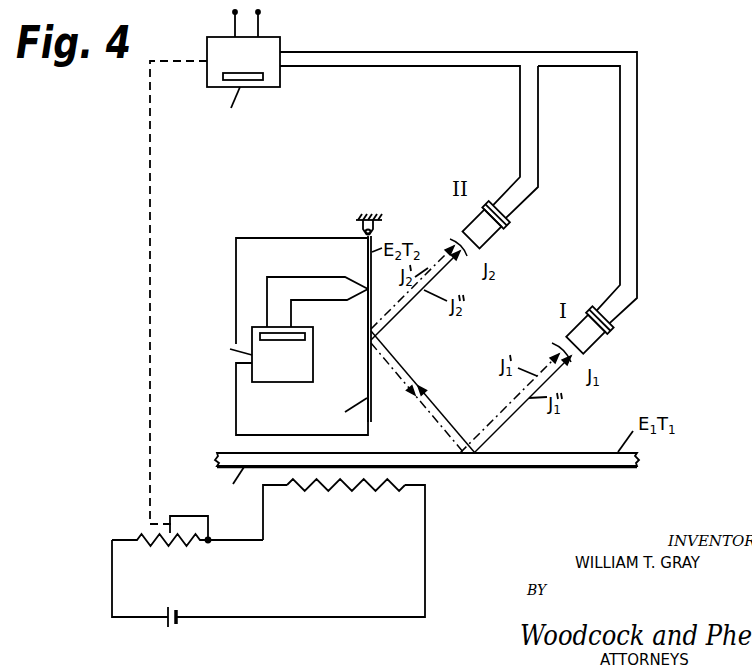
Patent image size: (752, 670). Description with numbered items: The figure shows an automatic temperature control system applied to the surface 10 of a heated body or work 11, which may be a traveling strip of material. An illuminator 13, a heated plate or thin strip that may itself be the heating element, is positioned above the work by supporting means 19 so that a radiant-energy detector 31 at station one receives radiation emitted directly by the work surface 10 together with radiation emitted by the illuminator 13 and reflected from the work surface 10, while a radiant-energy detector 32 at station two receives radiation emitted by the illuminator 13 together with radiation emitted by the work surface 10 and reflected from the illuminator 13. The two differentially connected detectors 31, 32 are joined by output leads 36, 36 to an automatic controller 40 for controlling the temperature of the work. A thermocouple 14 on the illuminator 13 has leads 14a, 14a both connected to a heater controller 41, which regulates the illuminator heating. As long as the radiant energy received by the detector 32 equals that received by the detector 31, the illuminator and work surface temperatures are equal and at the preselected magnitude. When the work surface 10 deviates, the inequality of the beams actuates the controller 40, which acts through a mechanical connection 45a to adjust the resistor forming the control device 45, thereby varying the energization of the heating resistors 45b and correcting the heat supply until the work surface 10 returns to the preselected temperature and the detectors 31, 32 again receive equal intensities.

The automatic controller 40 is at (258, 65).
The output leads 36 is at (462, 68).
The radiant-energy detector 32 is at (507, 220).
The radiant-energy detector 31 is at (607, 325).
The supporting means 19 is at (363, 231).
The illuminator 13 is at (372, 408).
The thermocouple 14 is at (364, 292).
The leads 14a is at (326, 300).
The heater controller 41 is at (296, 373).
The surface 10 is at (563, 452).
The work 11 is at (597, 468).
The control device 45 is at (166, 529).
The mechanical connection 45a is at (149, 292).
The heating resistors 45b is at (357, 481).